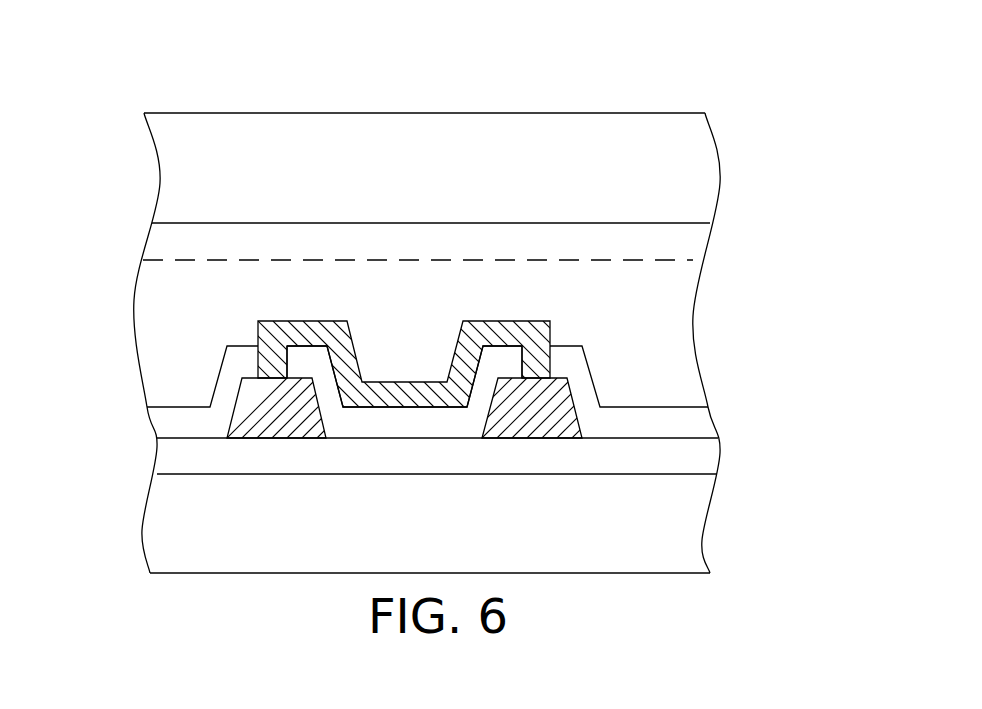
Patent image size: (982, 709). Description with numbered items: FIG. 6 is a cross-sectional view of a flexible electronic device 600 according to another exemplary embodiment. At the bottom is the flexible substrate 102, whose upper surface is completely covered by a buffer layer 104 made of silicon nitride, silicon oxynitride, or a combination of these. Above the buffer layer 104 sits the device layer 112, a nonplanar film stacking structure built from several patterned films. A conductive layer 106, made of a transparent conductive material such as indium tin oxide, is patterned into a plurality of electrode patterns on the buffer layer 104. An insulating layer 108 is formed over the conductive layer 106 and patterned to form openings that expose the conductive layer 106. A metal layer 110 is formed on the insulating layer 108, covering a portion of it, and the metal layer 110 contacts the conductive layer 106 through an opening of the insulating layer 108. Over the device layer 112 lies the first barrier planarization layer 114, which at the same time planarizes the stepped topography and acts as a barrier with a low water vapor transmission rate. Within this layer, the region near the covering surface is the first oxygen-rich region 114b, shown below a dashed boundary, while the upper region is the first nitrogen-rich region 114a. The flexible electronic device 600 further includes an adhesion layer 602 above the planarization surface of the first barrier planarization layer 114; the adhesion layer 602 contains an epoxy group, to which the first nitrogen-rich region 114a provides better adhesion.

The flexible electronic device 600 is at (130, 82).
The adhesion layer 602 is at (693, 165).
The first barrier planarization layer 114 is at (498, 260).
The first nitrogen-rich region 114a is at (668, 245).
The first oxygen-rich region 114b is at (668, 305).
The device layer 112 is at (495, 397).
The metal layer 110 is at (538, 332).
The insulating layer 108 is at (503, 363).
The conductive layer 106 is at (543, 418).
The buffer layer 104 is at (471, 456).
The flexible substrate 102 is at (693, 512).